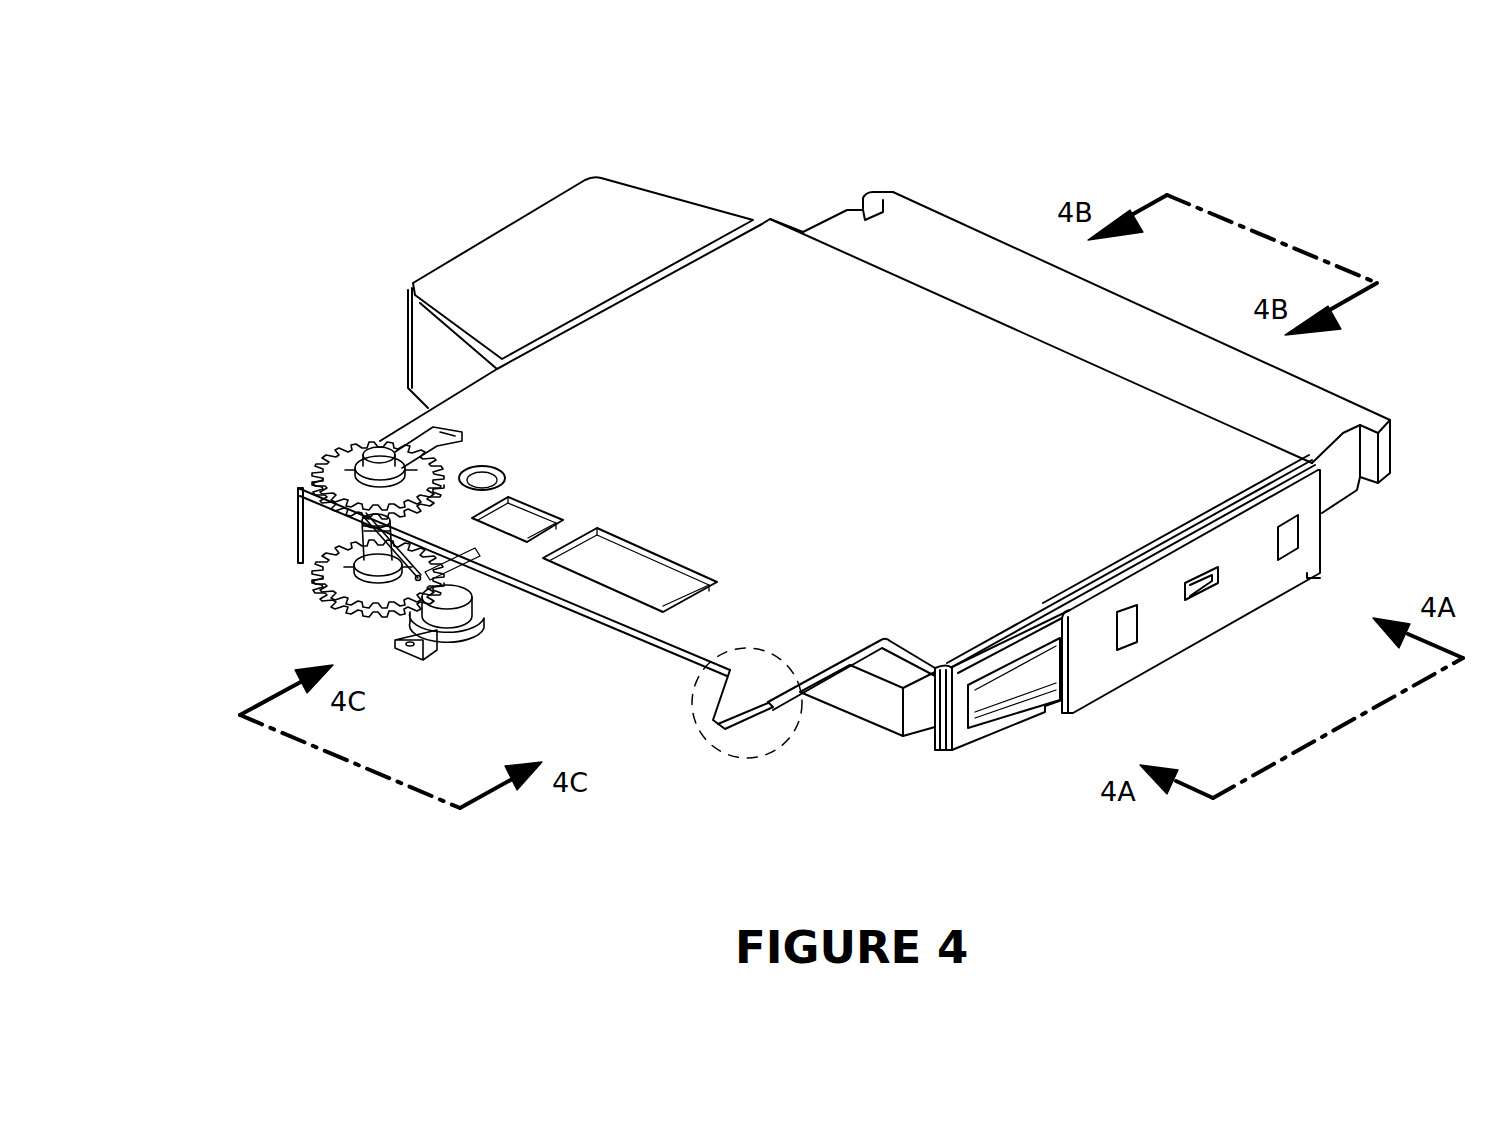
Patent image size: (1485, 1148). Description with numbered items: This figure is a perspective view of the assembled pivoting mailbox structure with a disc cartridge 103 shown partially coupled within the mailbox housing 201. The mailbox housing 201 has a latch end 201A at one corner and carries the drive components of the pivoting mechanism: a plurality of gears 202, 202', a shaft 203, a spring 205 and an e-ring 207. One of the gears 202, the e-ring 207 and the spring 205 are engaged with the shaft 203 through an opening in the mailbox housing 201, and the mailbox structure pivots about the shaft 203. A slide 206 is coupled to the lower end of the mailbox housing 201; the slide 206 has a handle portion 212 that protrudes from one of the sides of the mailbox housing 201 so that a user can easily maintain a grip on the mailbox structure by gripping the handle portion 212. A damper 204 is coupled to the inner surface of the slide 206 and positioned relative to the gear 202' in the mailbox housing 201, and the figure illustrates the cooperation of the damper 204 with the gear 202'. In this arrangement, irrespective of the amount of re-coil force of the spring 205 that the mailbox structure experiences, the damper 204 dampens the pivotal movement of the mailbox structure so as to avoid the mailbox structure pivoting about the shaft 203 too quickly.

The disc cartridge 103 is at (1318, 407).
The mailbox housing 201 is at (833, 672).
The latch end 201A is at (748, 762).
The gear 202 is at (333, 471).
The gear 202' is at (322, 580).
The shaft 203 is at (372, 446).
The damper 204 is at (478, 613).
The spring 205 is at (362, 518).
The slide 206 is at (1313, 538).
The e-ring 207 is at (380, 447).
The handle portion 212 is at (617, 192).